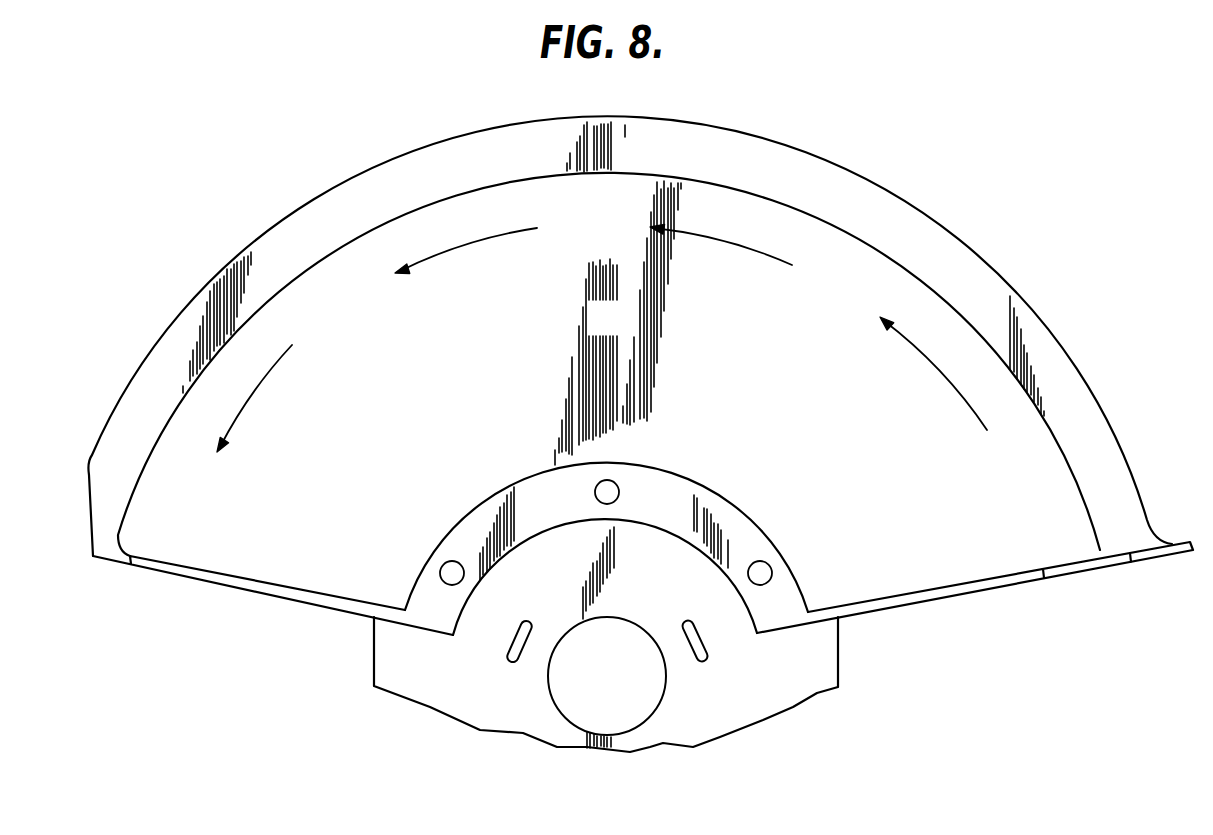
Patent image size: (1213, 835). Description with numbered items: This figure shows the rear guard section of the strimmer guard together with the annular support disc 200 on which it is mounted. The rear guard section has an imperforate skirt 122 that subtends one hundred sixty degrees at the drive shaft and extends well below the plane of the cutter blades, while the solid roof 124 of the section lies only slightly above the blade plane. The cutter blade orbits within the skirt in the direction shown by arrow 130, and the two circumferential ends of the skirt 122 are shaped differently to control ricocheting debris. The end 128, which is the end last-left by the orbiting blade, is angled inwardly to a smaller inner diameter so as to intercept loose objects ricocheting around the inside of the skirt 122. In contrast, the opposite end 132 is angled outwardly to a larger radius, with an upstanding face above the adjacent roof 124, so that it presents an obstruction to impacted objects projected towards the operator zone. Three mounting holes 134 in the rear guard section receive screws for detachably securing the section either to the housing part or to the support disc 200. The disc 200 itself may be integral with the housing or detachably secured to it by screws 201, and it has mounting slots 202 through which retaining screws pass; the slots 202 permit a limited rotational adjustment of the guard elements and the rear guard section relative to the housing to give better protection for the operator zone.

The imperforate skirt 122 is at (1028, 318).
The roof 124 is at (628, 330).
The end of skirt 128 is at (107, 558).
The arrow 130 is at (967, 397).
The end of skirt 132 is at (1159, 553).
The mounting holes 134 is at (768, 578).
The annular support disc 200 is at (386, 646).
The screws 201 is at (667, 680).
The mounting slots 202 is at (508, 648).